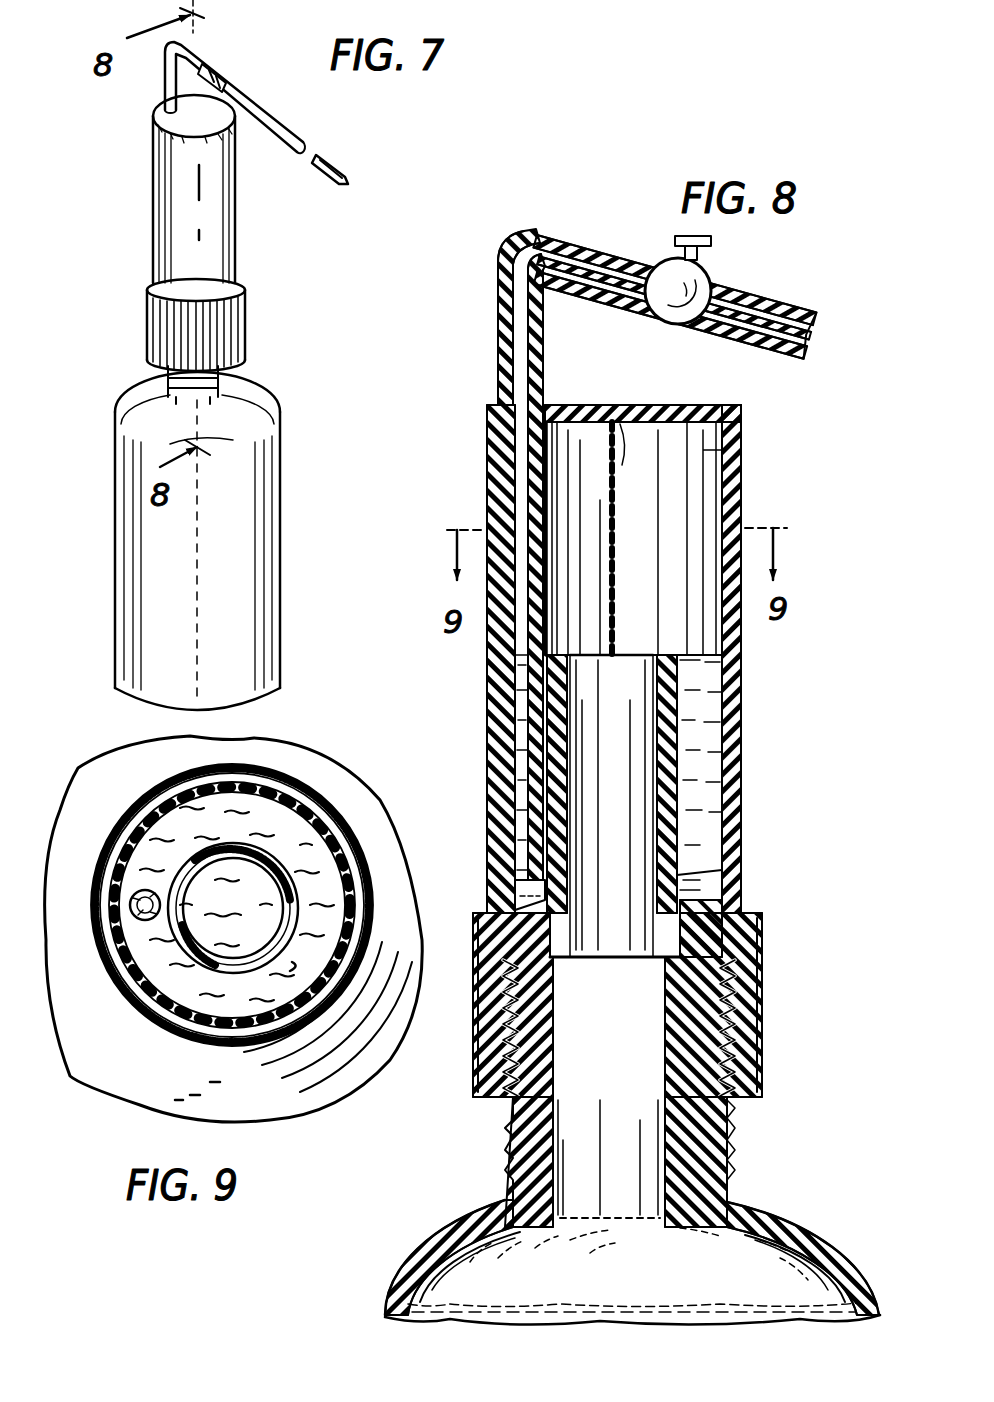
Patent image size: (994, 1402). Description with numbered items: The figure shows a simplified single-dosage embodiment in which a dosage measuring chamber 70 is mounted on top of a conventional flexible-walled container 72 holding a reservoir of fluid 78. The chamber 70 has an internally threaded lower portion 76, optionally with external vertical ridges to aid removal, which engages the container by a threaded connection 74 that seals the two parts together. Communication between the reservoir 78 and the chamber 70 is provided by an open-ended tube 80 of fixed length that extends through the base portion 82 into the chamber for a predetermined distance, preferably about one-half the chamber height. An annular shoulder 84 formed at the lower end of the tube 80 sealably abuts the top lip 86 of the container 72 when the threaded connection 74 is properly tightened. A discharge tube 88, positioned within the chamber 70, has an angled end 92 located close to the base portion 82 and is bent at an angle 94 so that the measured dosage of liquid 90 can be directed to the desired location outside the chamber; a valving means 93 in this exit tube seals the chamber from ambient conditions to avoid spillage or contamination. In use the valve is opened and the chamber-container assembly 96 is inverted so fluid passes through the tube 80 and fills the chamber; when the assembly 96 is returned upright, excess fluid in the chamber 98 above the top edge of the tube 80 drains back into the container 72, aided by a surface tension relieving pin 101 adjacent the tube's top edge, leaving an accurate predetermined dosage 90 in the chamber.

In FIG. 7, the dosage measuring chamber 70 is at (242, 218).
In FIG. 8, the dosage measuring chamber 70 is at (750, 721).
In FIG. 7, the flexible-walled container 72 is at (278, 489).
In FIG. 8, the flexible-walled container 72 is at (843, 1232).
In FIG. 9, the flexible-walled container 72 is at (122, 1078).
In FIG. 8, the threaded connection 74 is at (740, 1094).
In FIG. 7, the internally threaded lower portion 76 is at (247, 318).
In FIG. 8, the internally threaded lower portion 76 is at (747, 981).
In FIG. 9, the internally threaded lower portion 76 is at (290, 782).
In FIG. 8, the reservoir of fluid 78 is at (440, 1287).
In FIG. 9, the reservoir of fluid 78 is at (206, 934).
In FIG. 8, the open-ended tube 80 is at (690, 820).
In FIG. 9, the open-ended tube 80 is at (170, 930).
In FIG. 8, the base portion 82 is at (742, 870).
In FIG. 8, the annular shoulder 84 is at (720, 943).
In FIG. 8, the top lip 86 is at (483, 1007).
In FIG. 7, the discharge tube 88 is at (290, 123).
In FIG. 8, the discharge tube 88 is at (593, 268).
In FIG. 9, the discharge tube 88 is at (138, 893).
In FIG. 8, the measured dosage of liquid 90 is at (713, 765).
In FIG. 9, the measured dosage of liquid 90 is at (162, 782).
In FIG. 8, the angled end 92 is at (530, 892).
In FIG. 8, the valving means 93 is at (710, 272).
In FIG. 7, the angled portion of discharge tube 94 is at (168, 48).
In FIG. 8, the angled portion of discharge tube 94 is at (529, 238).
In FIG. 7, the chamber-container assembly 96 is at (118, 391).
In FIG. 8, the chamber 98 is at (726, 452).
In FIG. 8, the pin 101 is at (637, 415).